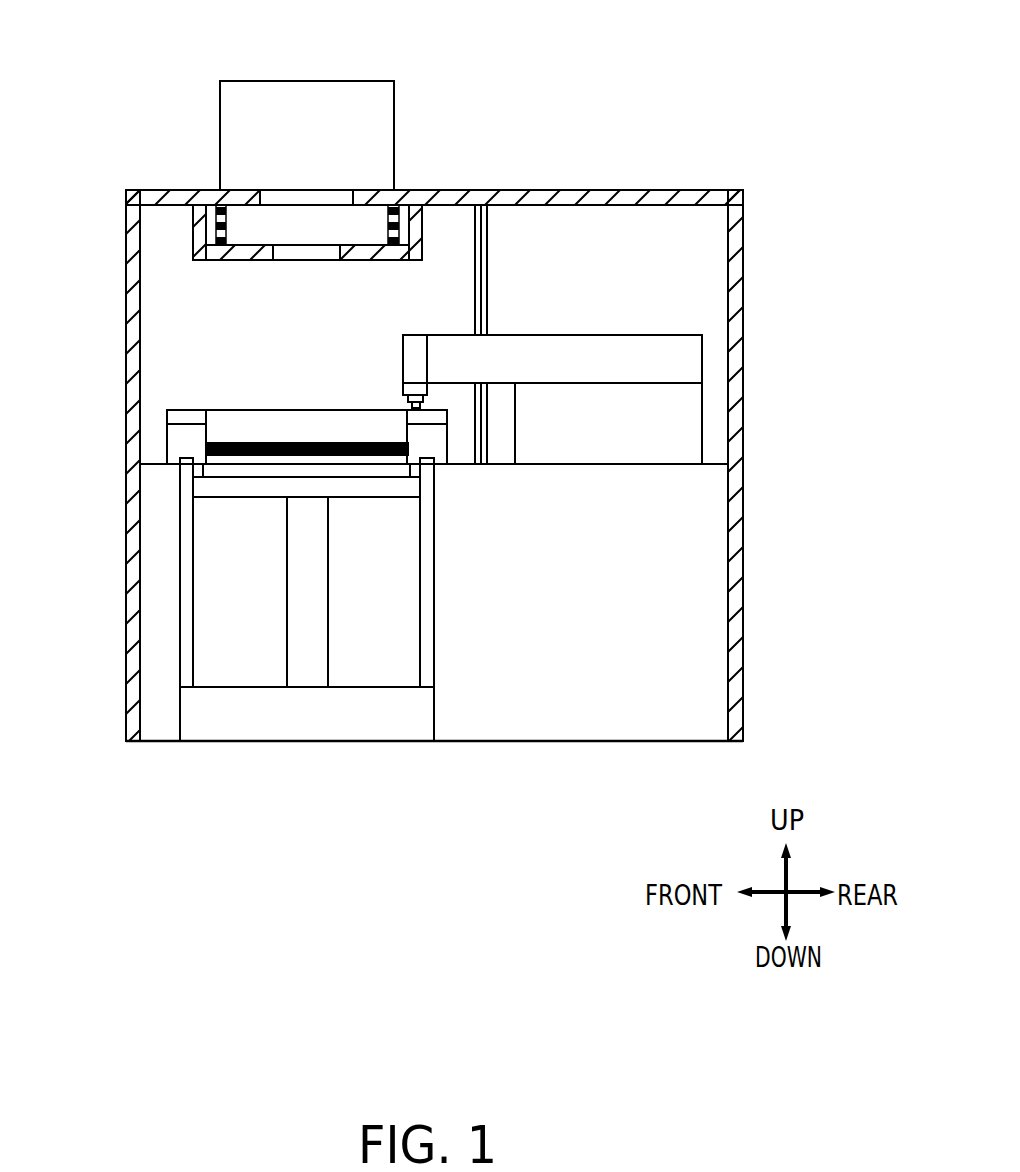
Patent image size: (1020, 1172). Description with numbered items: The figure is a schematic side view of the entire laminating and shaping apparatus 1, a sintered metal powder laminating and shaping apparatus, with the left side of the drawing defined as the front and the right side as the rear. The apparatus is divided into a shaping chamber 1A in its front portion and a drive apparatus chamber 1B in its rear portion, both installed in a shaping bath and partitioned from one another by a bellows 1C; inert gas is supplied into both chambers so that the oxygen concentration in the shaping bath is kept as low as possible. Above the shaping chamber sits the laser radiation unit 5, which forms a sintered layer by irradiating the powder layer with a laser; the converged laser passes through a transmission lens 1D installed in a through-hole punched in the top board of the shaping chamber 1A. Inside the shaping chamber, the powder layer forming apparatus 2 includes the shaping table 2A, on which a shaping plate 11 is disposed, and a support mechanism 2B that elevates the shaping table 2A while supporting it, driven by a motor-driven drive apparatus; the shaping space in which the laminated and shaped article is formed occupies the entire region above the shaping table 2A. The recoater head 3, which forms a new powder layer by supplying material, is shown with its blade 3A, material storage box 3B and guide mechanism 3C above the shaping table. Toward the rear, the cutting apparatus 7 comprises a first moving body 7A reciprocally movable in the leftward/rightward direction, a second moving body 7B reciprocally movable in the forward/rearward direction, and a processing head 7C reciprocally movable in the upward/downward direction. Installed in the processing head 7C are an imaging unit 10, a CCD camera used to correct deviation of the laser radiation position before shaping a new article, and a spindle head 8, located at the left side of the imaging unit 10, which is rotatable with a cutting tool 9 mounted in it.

The laminating and shaping apparatus 1 is at (733, 158).
The shaping chamber 1A is at (168, 233).
The drive apparatus chamber 1B is at (698, 247).
The bellows 1C is at (485, 267).
The transmission lens 1D is at (312, 198).
The laser radiation unit 5 is at (255, 97).
The recoater head 3 is at (248, 378).
The blade 3A is at (242, 462).
The material storage box 3B is at (229, 427).
The guide mechanism 3C is at (177, 443).
The powder layer forming apparatus 2 is at (248, 599).
The shaping table 2A is at (207, 490).
The support mechanism 2B is at (305, 560).
The shaping plate 11 is at (325, 474).
The cutting apparatus 7 is at (568, 383).
The first moving body 7A is at (693, 418).
The second moving body 7B is at (693, 362).
The processing head 7C is at (412, 343).
The spindle head 8 is at (424, 401).
The cutting tool 9 is at (407, 408).
The imaging unit 10 is at (424, 409).